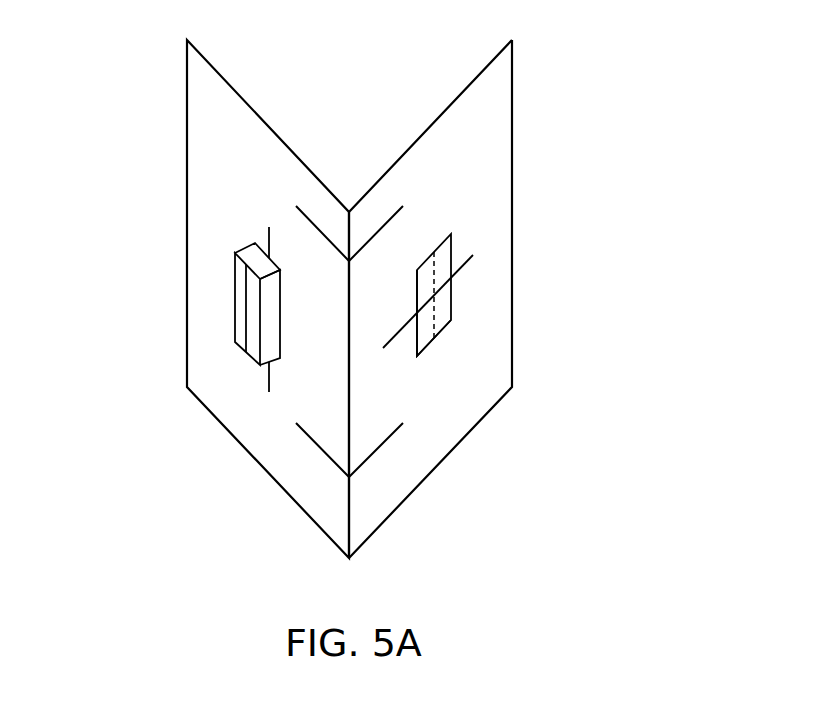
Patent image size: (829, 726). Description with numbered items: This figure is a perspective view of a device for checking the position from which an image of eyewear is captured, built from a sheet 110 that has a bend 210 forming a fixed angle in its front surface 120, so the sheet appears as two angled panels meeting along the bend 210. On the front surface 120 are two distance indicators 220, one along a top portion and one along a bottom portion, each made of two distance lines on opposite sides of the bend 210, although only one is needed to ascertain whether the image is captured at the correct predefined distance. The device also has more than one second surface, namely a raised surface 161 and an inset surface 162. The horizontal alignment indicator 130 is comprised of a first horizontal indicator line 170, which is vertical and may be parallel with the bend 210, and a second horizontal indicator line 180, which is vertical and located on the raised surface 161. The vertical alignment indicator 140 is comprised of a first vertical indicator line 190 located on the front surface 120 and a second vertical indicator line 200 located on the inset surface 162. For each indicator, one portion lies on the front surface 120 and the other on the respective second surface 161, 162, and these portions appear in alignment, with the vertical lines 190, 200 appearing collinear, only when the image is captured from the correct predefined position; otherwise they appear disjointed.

The sheet 110 is at (502, 67).
The front surface 120 is at (500, 157).
The horizontal alignment indicator 130 is at (226, 350).
The vertical alignment indicator 140 is at (474, 289).
The raised surface 161 is at (241, 300).
The inset surface 162 is at (422, 345).
The first horizontal indicator line 170 is at (269, 392).
The second horizontal indicator line 180 is at (246, 330).
The first vertical indicator line 190 is at (463, 262).
The second vertical indicator line 200 is at (434, 335).
The bend 210 is at (349, 558).
The distance indicator 220 is at (303, 212).